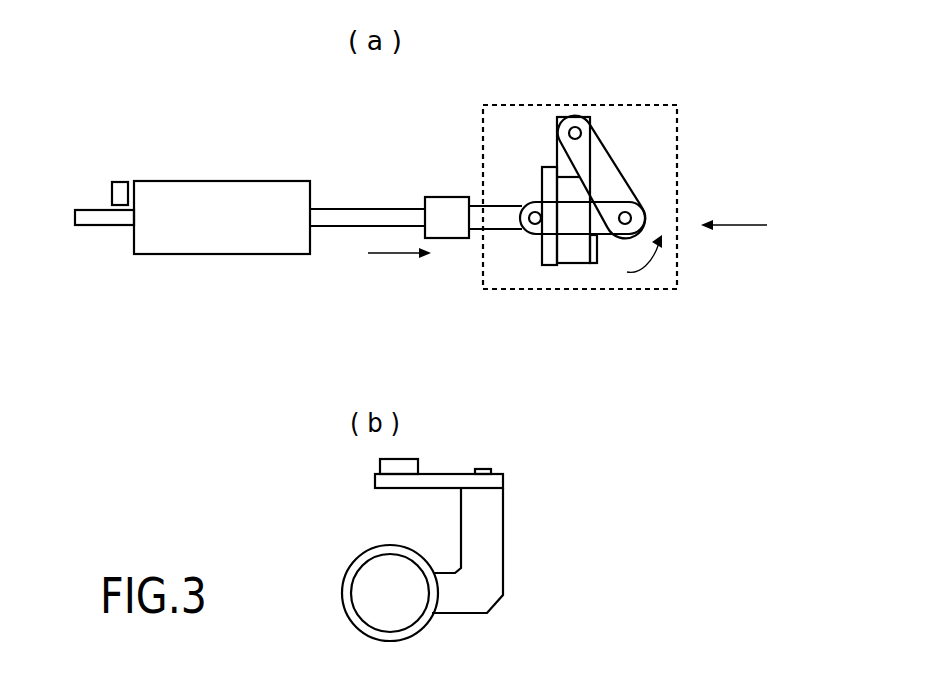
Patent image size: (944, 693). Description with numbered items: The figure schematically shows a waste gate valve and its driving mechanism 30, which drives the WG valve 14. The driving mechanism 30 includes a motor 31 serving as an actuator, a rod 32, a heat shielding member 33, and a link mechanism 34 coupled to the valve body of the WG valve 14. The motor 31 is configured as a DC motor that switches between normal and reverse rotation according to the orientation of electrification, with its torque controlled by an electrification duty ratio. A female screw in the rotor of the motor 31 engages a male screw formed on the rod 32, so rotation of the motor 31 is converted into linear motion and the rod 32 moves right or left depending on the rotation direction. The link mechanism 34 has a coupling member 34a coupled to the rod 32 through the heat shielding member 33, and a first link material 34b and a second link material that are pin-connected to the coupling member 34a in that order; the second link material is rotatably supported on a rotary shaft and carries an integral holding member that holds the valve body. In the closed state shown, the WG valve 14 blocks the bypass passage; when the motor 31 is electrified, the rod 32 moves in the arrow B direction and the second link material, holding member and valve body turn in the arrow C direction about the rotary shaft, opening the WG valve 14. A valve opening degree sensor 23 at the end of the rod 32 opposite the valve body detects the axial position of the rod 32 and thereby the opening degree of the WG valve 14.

The WG valve 14 is at (538, 267).
The valve opening degree sensor 23 is at (112, 190).
The driving mechanism 30 is at (460, 98).
The motor 31 is at (200, 181).
The rod 32 is at (355, 209).
The heat shielding member 33 is at (446, 197).
The link mechanism 34 is at (677, 160).
The coupling member 34a is at (502, 221).
The first link material 34b is at (603, 210).